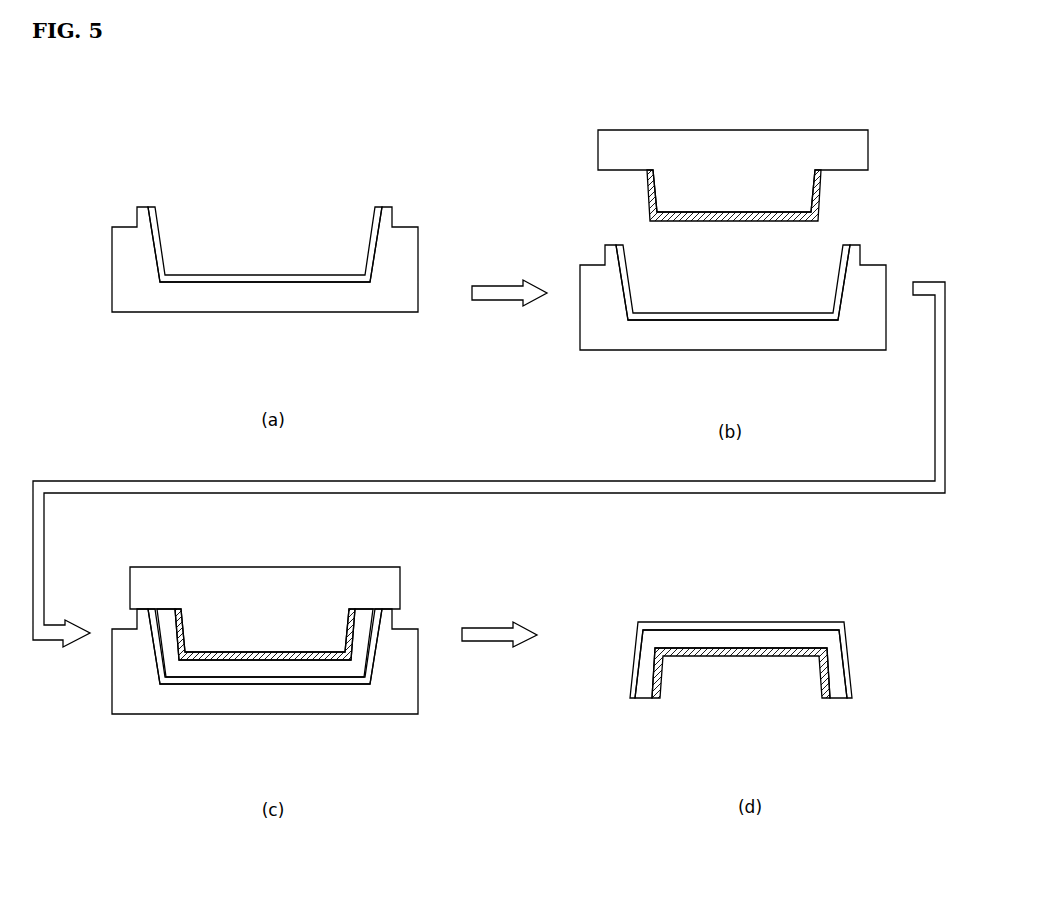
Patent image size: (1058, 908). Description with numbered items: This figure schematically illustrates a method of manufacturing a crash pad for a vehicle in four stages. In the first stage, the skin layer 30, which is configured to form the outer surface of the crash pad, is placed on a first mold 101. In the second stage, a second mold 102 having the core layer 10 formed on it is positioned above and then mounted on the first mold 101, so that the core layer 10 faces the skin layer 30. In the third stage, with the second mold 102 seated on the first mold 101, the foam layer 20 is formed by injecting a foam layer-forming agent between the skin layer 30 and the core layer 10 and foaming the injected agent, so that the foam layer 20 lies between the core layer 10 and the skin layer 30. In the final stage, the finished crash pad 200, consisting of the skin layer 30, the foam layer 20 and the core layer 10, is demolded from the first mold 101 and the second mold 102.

The core layer 10 is at (717, 213).
The foam layer 20 is at (252, 665).
The skin layer 30 is at (307, 277).
The first mold 101 is at (390, 297).
The second mold 102 is at (841, 150).
The crash pad 200 is at (625, 560).